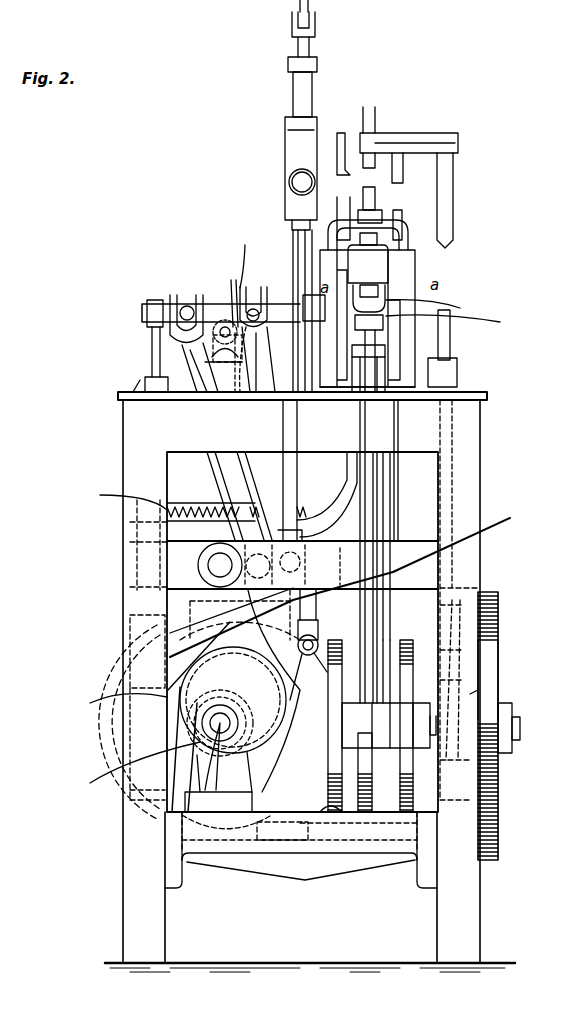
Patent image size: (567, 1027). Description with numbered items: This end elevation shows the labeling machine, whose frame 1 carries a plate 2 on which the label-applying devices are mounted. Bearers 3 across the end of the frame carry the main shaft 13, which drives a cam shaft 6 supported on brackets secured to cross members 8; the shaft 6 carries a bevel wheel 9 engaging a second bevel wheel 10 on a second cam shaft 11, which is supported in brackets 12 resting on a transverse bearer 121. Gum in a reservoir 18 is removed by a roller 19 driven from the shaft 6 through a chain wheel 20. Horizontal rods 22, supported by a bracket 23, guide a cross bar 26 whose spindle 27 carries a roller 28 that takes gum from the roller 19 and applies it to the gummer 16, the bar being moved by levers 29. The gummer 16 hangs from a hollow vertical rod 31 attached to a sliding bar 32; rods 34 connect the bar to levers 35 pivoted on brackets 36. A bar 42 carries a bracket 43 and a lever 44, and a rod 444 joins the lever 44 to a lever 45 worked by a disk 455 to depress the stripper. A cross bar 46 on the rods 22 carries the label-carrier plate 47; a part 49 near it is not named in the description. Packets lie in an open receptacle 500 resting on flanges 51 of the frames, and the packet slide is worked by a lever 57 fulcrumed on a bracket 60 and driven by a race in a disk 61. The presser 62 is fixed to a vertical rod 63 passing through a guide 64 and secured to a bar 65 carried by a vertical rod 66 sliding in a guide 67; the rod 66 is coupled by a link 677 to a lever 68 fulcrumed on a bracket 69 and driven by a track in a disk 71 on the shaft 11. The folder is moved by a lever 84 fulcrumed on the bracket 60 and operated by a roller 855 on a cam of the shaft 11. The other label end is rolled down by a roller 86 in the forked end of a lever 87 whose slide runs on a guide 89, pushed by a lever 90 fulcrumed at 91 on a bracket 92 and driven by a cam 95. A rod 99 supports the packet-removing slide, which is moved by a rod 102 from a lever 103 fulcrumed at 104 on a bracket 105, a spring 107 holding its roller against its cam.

The frame 1 is at (160, 440).
The plate 2 is at (125, 375).
The bearers 3 is at (302, 565).
The cam shaft 6 is at (213, 756).
The cross members 8 is at (232, 848).
The bevel wheel 9 is at (160, 790).
The second bevel wheel 10 is at (218, 782).
The second cam shaft 11 is at (520, 728).
The brackets 12 is at (330, 818).
The main shaft 13 is at (208, 570).
The gummer 16 is at (300, 296).
The gum reservoir 18 is at (224, 354).
The roller 19 is at (225, 337).
The chain wheel 20 is at (232, 712).
The horizontal rods 22 is at (142, 311).
The bracket 23 is at (160, 300).
The cross bar 26 is at (187, 295).
The spindle 27 is at (226, 291).
The roller 28 is at (246, 258).
The levers 29 is at (195, 371).
The hollow vertical rod 31 is at (302, 96).
The bar 32 is at (284, 175).
The rods 34 is at (293, 240).
The levers 35 is at (231, 614).
The bracket 36 is at (160, 628).
The bar 42 is at (317, 64).
The bracket 43 is at (315, 32).
The lever 44 is at (298, 6).
The lever 45 is at (236, 665).
The cross bar 46 is at (252, 284).
The plate 47 is at (312, 400).
The rod 49 is at (260, 360).
The flanges 51 is at (352, 770).
The lever 57 is at (318, 605).
The bracket 60 is at (378, 485).
The disk 61 is at (365, 812).
The presser 62 is at (368, 251).
The vertical rod 63 is at (375, 118).
The guide 64 is at (415, 262).
The bar 65 is at (450, 124).
The vertical rod 66 is at (450, 338).
The guide 67 is at (457, 370).
The lever 68 is at (486, 695).
The bracket 69 is at (498, 780).
The disk 71 is at (498, 610).
The lever 84 is at (386, 612).
The roller 86 is at (368, 338).
The lever 87 is at (432, 311).
The guide 89 is at (453, 321).
The lever 90 is at (366, 528).
The fulcrum 91 is at (349, 582).
The bracket 92 is at (392, 500).
The cam 95 is at (368, 755).
The rod 99 is at (396, 408).
The rod 102 is at (178, 508).
The lever 103 is at (137, 520).
The fulcrum 104 is at (118, 705).
The bracket 105 is at (100, 762).
The spring 107 is at (123, 497).
The bearer 121 is at (355, 866).
The rod 444 is at (324, 656).
The disk 455 is at (296, 770).
The receptacle 500 is at (410, 205).
The link 677 is at (482, 590).
The roller 855 is at (425, 635).